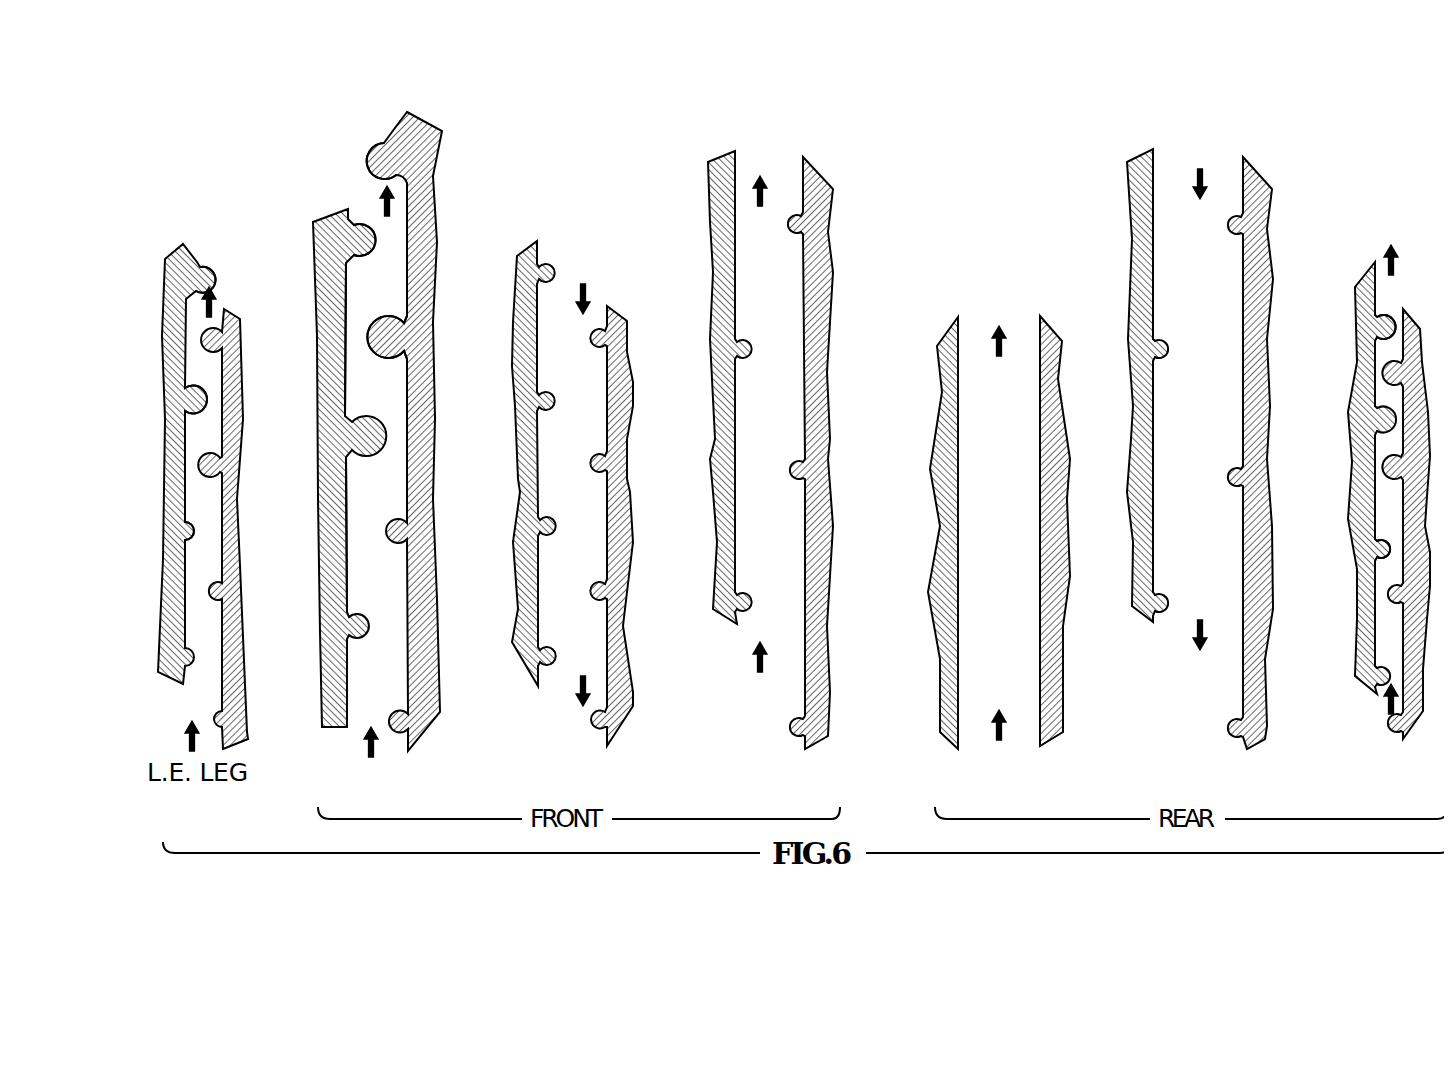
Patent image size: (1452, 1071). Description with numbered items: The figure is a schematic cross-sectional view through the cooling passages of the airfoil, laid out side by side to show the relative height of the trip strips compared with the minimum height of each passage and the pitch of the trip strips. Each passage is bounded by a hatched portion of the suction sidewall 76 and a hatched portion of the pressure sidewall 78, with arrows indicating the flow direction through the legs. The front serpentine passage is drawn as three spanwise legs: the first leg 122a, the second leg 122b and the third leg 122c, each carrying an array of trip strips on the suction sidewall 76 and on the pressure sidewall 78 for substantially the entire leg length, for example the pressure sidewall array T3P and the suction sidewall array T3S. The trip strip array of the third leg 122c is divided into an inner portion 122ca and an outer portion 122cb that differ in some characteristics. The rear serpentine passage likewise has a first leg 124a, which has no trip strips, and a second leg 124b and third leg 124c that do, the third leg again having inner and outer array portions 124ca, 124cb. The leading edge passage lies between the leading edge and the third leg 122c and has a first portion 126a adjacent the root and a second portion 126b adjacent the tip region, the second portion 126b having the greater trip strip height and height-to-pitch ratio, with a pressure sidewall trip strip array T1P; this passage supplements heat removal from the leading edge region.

The suction sidewall 76 is at (237, 406).
The pressure sidewall 78 is at (175, 445).
The first leg of front serpentine passage 122a is at (797, 545).
The second leg of front serpentine passage 122b is at (600, 632).
The third leg of front serpentine passage 122c is at (388, 385).
The inner portion of trip strip array 122ca is at (353, 600).
The outer portion of trip strip array 122cb is at (352, 305).
The first leg of rear serpentine passage 124a is at (1022, 528).
The second leg of rear serpentine passage 124b is at (1222, 533).
The third leg of rear serpentine passage 124c is at (1390, 638).
The third rear leg portion 124ca is at (1390, 573).
The third rear leg portion 124cb is at (1388, 356).
The first portion of third passage 126a is at (195, 563).
The second portion of third passage 126b is at (192, 376).
The first turn pressure side T1P is at (199, 264).
The array of pressure sidewall trip strips T3P is at (372, 226).
The array of suction sidewall trip strips T3S is at (380, 137).